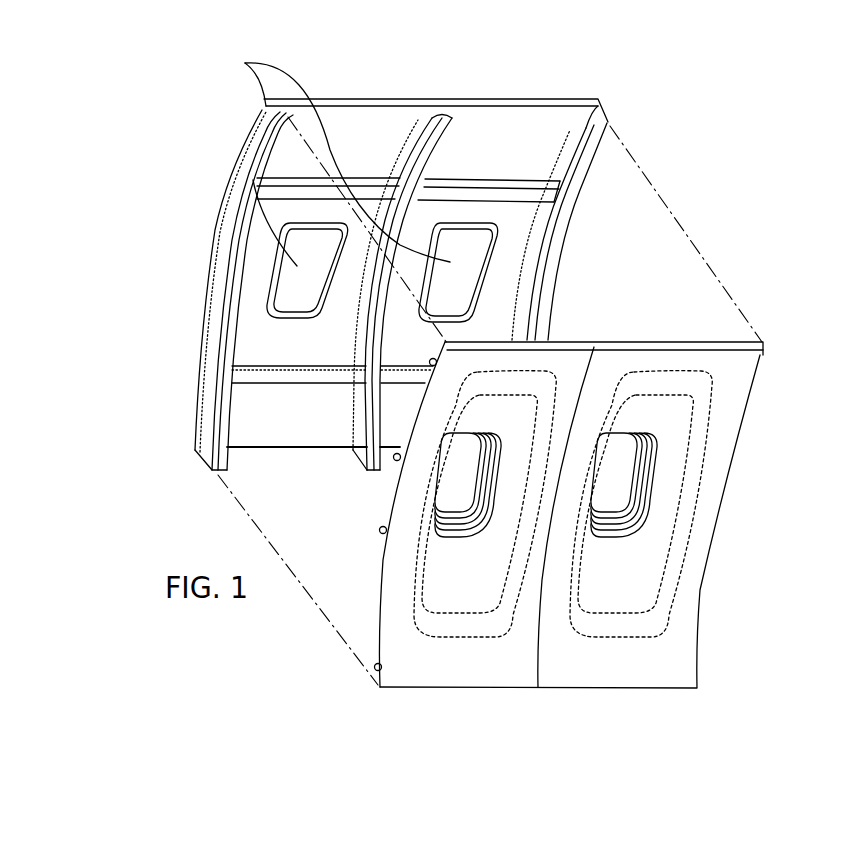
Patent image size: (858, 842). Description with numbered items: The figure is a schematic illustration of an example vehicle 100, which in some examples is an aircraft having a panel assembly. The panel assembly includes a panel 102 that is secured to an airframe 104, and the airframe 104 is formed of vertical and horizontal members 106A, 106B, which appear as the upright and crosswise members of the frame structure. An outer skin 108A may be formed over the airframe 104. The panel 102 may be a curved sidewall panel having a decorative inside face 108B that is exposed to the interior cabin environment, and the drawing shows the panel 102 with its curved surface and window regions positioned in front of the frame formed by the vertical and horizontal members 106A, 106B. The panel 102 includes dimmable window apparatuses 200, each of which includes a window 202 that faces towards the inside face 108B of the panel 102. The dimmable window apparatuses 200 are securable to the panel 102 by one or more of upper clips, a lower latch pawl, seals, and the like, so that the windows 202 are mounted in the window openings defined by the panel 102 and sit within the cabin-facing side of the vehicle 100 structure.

The vehicle 100 is at (410, 250).
The panel 102 is at (523, 555).
The airframe 104 is at (374, 640).
The vertical member 106A is at (430, 144).
The horizontal member 106B is at (252, 378).
The outer skin 108A is at (637, 621).
The decorative inside face 108B is at (520, 142).
The dimmable window apparatus 200 is at (459, 483).
The window 202 is at (310, 148).